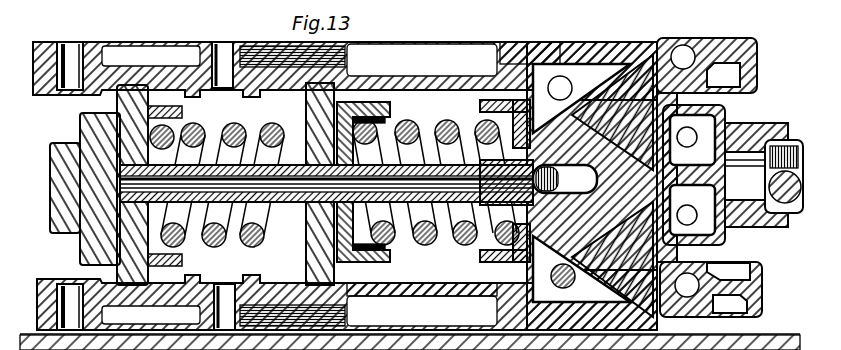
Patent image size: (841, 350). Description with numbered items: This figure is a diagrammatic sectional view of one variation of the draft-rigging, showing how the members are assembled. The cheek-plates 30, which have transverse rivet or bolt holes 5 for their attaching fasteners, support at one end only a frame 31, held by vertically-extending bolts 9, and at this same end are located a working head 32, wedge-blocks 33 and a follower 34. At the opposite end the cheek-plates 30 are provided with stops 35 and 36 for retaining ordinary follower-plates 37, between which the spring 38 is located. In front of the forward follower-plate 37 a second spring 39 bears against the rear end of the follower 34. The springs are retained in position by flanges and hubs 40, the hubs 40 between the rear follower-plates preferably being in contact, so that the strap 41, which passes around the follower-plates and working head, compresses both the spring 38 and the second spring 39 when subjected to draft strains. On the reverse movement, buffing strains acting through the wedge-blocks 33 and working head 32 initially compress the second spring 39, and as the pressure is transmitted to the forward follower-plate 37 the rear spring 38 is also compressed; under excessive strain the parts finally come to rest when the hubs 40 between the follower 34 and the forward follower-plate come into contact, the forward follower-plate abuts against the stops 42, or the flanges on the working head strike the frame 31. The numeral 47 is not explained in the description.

The transverse rivet or bolt holes 5 is at (292, 184).
The vertically-extending bolts 9 is at (572, 50).
The cheek-plates 30 is at (505, 42).
The frame 31 is at (600, 268).
The working head 32 is at (724, 112).
The wedge-blocks 33 is at (686, 44).
The follower 34 is at (538, 181).
The stop 35 is at (115, 44).
The stop 36 is at (352, 60).
The follower-plates 37 is at (630, 27).
The spring 38 is at (217, 165).
The second spring 39 is at (436, 168).
The flanges and hubs 40 is at (212, 249).
The strap 41 is at (50, 188).
The stops 42 is at (298, 184).
The casing part 47 is at (410, 340).